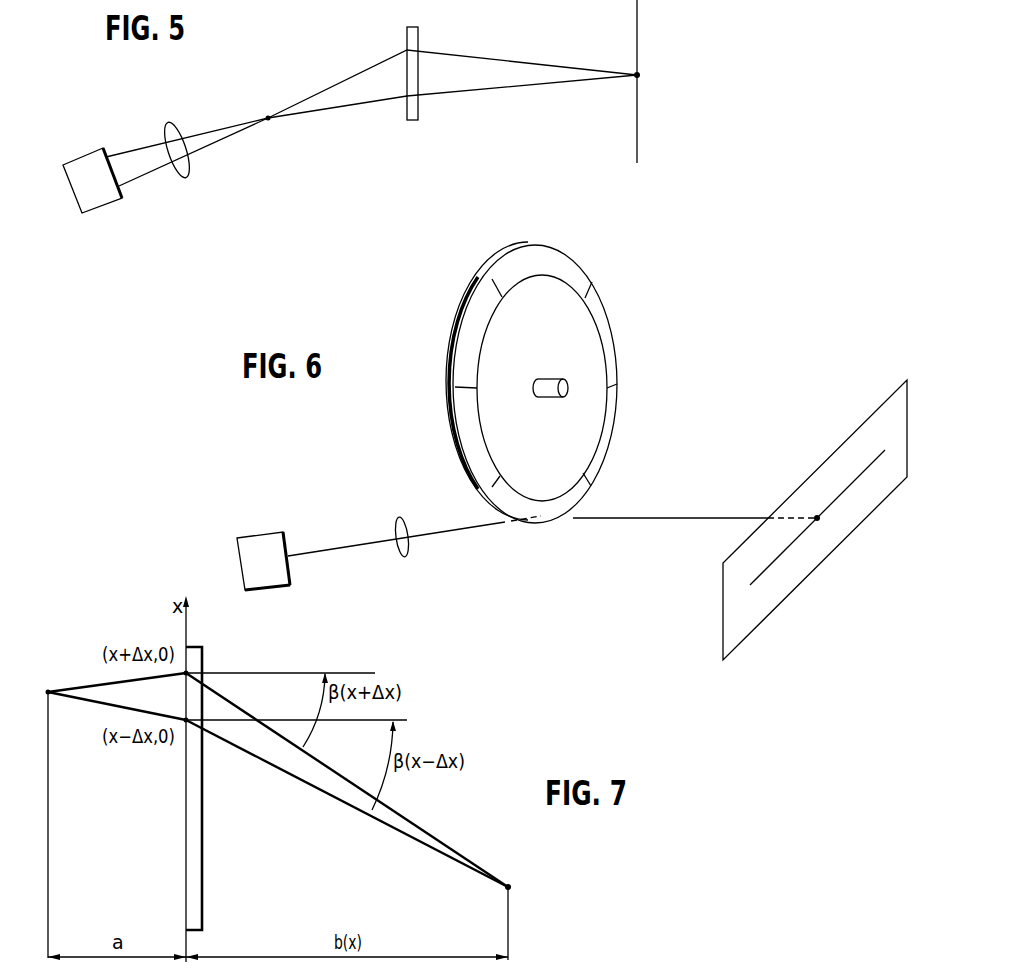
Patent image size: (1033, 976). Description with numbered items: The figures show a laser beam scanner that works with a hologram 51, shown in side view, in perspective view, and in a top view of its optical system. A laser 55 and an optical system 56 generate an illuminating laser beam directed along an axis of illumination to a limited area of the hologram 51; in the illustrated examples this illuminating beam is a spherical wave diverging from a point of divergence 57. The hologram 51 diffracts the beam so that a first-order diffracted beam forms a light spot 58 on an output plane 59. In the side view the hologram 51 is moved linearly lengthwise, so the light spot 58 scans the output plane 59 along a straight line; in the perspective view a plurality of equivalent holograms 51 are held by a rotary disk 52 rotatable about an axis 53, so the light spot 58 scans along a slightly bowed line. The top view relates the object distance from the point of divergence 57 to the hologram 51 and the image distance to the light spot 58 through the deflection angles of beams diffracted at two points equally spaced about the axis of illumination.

In FIG. 5, the hologram 51 is at (412, 121).
In FIG. 6, the hologram 51 is at (562, 502).
In FIG. 7, the hologram 51 is at (184, 877).
In FIG. 6, the rotary disk 52 is at (618, 430).
In FIG. 6, the axis 53 is at (532, 399).
In FIG. 5, the laser 55 is at (104, 205).
In FIG. 6, the laser 55 is at (299, 518).
In FIG. 5, the optical system 56 is at (189, 163).
In FIG. 6, the optical system 56 is at (407, 547).
In FIG. 5, the point of divergence 57 is at (270, 120).
In FIG. 7, the point of divergence 57 is at (52, 690).
In FIG. 5, the light spot 58 is at (641, 75).
In FIG. 6, the light spot 58 is at (817, 522).
In FIG. 7, the light spot 58 is at (511, 889).
In FIG. 5, the output plane 59 is at (637, 150).
In FIG. 6, the output plane 59 is at (800, 487).